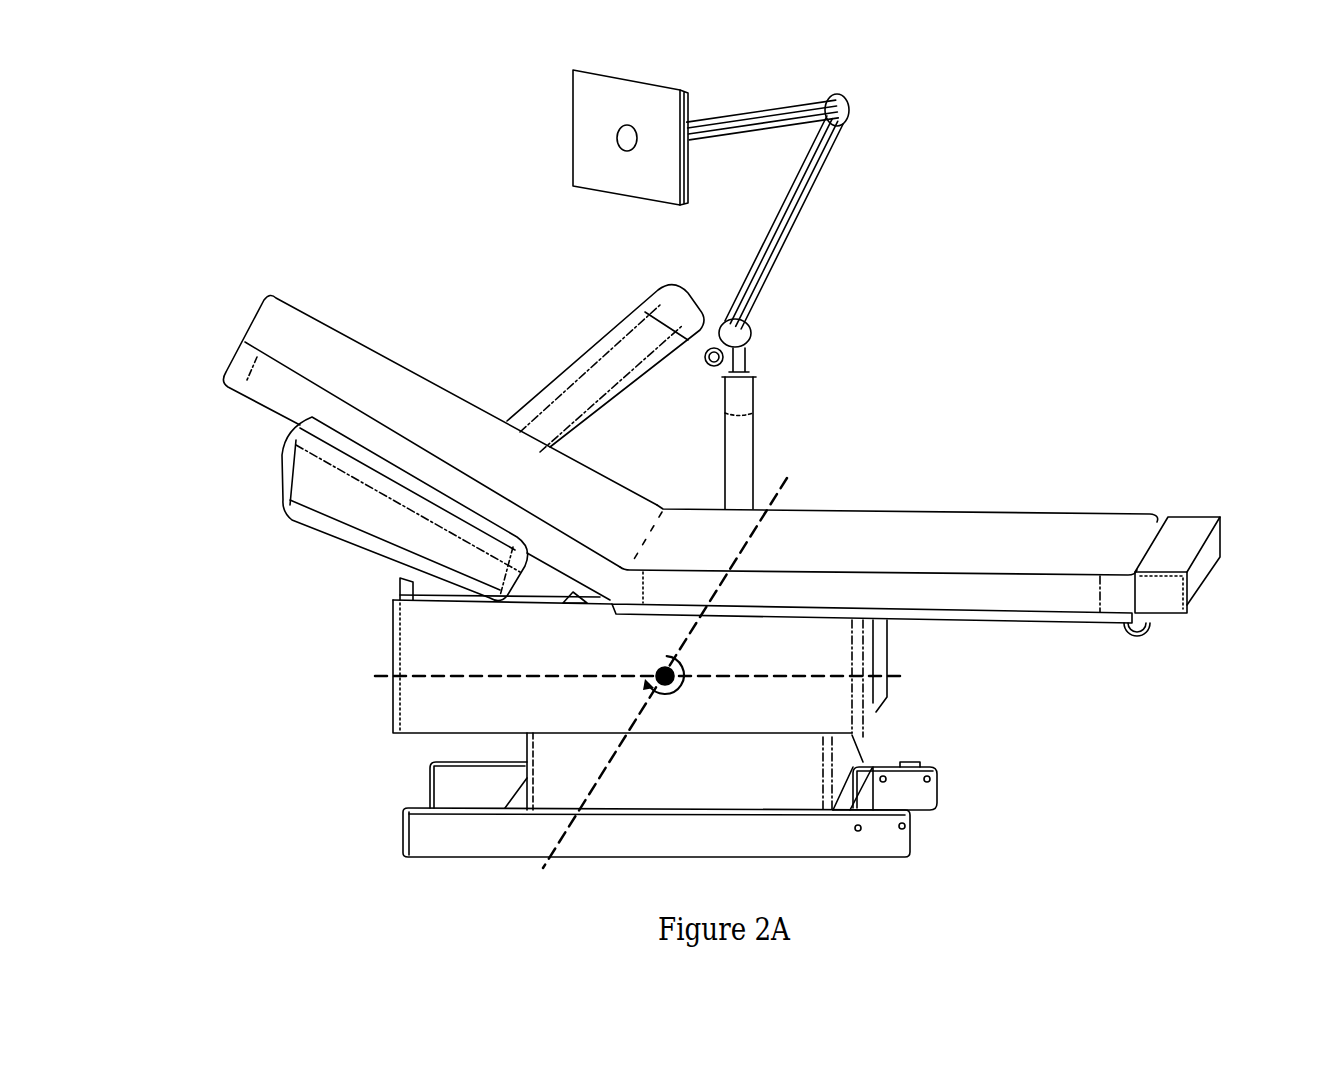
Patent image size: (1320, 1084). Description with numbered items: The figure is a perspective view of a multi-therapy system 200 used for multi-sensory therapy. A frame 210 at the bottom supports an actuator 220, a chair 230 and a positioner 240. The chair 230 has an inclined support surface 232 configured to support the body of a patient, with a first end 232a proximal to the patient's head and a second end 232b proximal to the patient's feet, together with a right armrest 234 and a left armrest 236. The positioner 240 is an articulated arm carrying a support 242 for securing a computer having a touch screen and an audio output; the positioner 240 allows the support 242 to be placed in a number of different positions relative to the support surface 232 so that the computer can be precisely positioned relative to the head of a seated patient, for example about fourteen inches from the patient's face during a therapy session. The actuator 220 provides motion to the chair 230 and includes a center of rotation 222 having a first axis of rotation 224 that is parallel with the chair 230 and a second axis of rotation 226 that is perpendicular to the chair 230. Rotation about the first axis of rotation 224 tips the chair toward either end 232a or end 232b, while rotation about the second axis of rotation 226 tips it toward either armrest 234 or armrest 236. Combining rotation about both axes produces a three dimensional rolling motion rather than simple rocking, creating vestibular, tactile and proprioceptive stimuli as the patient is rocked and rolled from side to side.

The multi-therapy system 200 is at (248, 205).
The frame 210 is at (413, 832).
The actuator 220 is at (438, 652).
The center of rotation 222 is at (672, 677).
The first axis of rotation 224 is at (758, 535).
The second axis of rotation 226 is at (907, 677).
The chair 230 is at (982, 592).
The support surface 232 is at (1063, 528).
The first end 232a is at (258, 308).
The second end 232b is at (1200, 560).
The right armrest 234 is at (310, 470).
The left armrest 236 is at (610, 370).
The positioner 240 is at (760, 270).
The support 242 is at (597, 93).